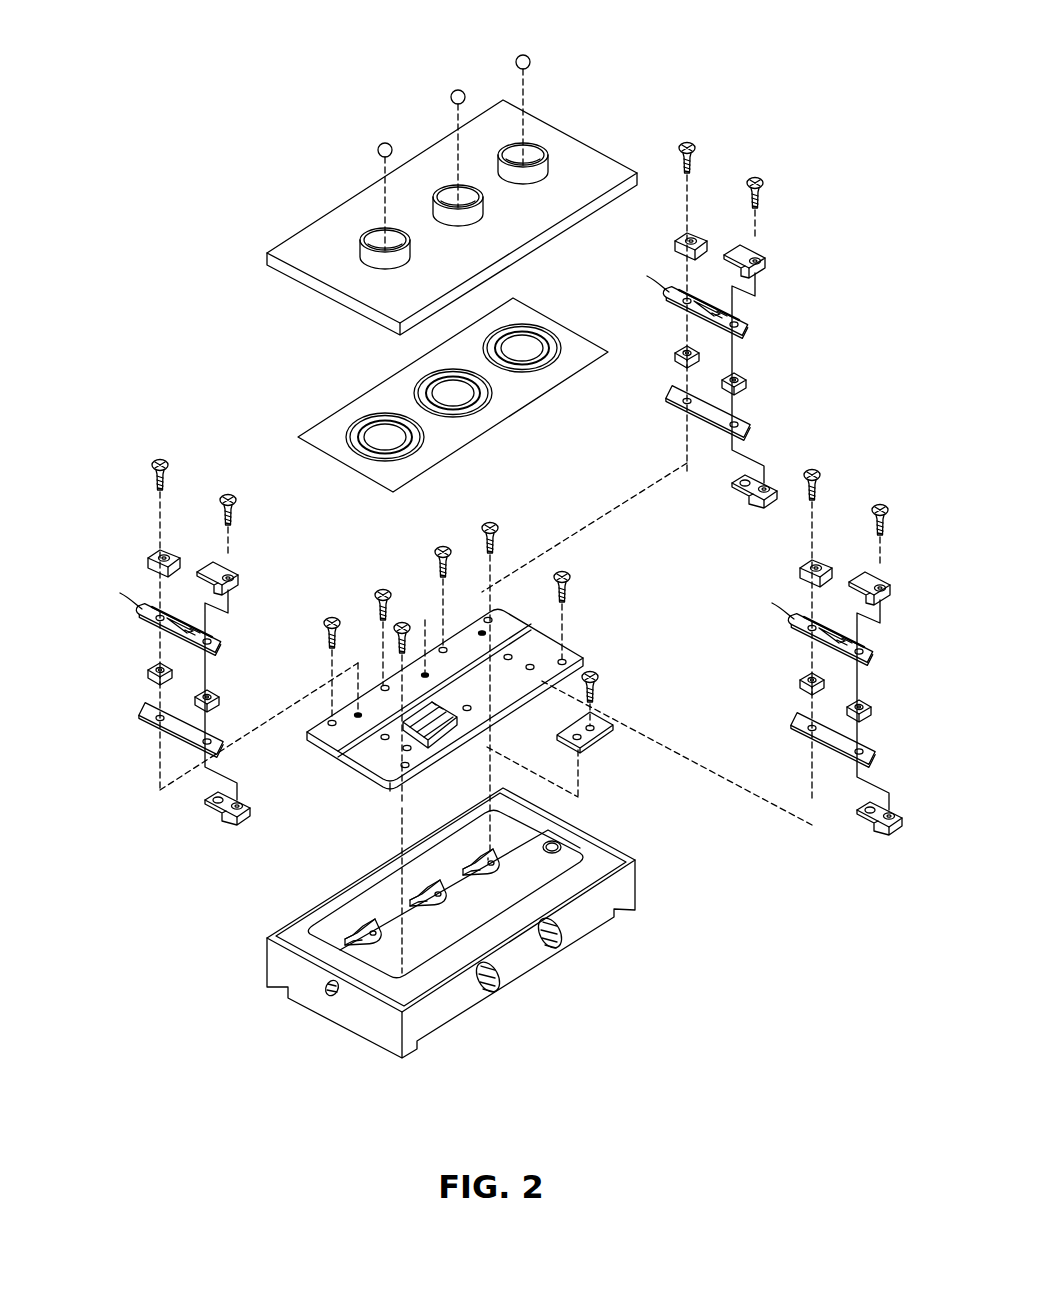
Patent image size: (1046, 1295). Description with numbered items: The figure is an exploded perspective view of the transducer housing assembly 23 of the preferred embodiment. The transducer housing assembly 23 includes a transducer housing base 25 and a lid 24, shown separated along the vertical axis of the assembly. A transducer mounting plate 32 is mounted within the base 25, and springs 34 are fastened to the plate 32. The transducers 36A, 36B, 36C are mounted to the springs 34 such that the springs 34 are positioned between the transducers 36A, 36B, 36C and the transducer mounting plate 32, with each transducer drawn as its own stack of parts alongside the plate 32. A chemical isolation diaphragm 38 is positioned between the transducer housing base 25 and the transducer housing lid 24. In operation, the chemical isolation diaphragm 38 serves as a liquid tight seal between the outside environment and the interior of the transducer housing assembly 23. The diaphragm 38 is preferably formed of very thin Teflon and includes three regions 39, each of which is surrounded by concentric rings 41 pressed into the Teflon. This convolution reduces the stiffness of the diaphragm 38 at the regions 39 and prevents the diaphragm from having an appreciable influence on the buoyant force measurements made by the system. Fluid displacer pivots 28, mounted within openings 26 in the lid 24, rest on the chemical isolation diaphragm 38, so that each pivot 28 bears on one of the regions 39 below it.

The transducer housing assembly 23 is at (177, 190).
The transducer housing lid 24 is at (437, 268).
The transducer housing base 25 is at (292, 923).
The openings 26 is at (362, 250).
The fluid displacer pivots 28 is at (378, 151).
The transducer mounting plate 32 is at (570, 648).
The springs 34 is at (150, 724).
The transducer 36A is at (150, 627).
The transducer 36B is at (800, 638).
The transducer 36C is at (745, 333).
The chemical isolation diaphragm 38 is at (318, 422).
The regions 39 is at (387, 437).
The concentric rings 41 is at (490, 398).